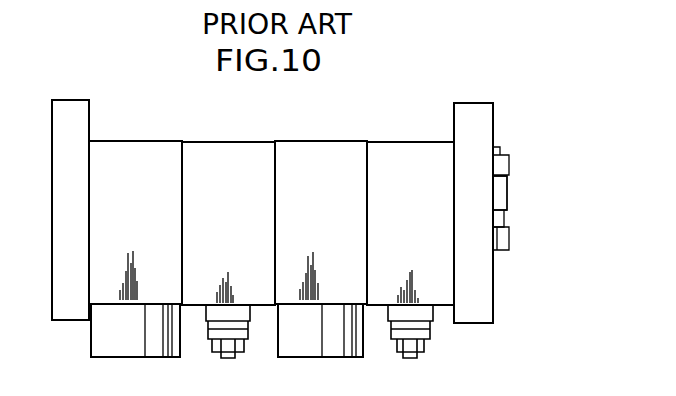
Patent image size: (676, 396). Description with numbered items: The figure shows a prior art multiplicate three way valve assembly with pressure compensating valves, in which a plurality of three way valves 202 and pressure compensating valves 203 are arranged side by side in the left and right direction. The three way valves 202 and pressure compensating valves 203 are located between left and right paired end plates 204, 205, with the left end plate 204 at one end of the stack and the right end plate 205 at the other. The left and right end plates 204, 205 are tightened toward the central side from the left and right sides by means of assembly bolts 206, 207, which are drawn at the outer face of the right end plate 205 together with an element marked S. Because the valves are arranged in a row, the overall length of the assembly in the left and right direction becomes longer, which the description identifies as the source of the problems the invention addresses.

The three way valve 202 is at (146, 147).
The pressure compensating valve 203 is at (238, 148).
The left end plate 204 is at (75, 103).
The right end plate 205 is at (478, 108).
The assembly bolt 206 is at (510, 160).
The assembly bolt 207 is at (508, 241).
The switch S is at (507, 192).